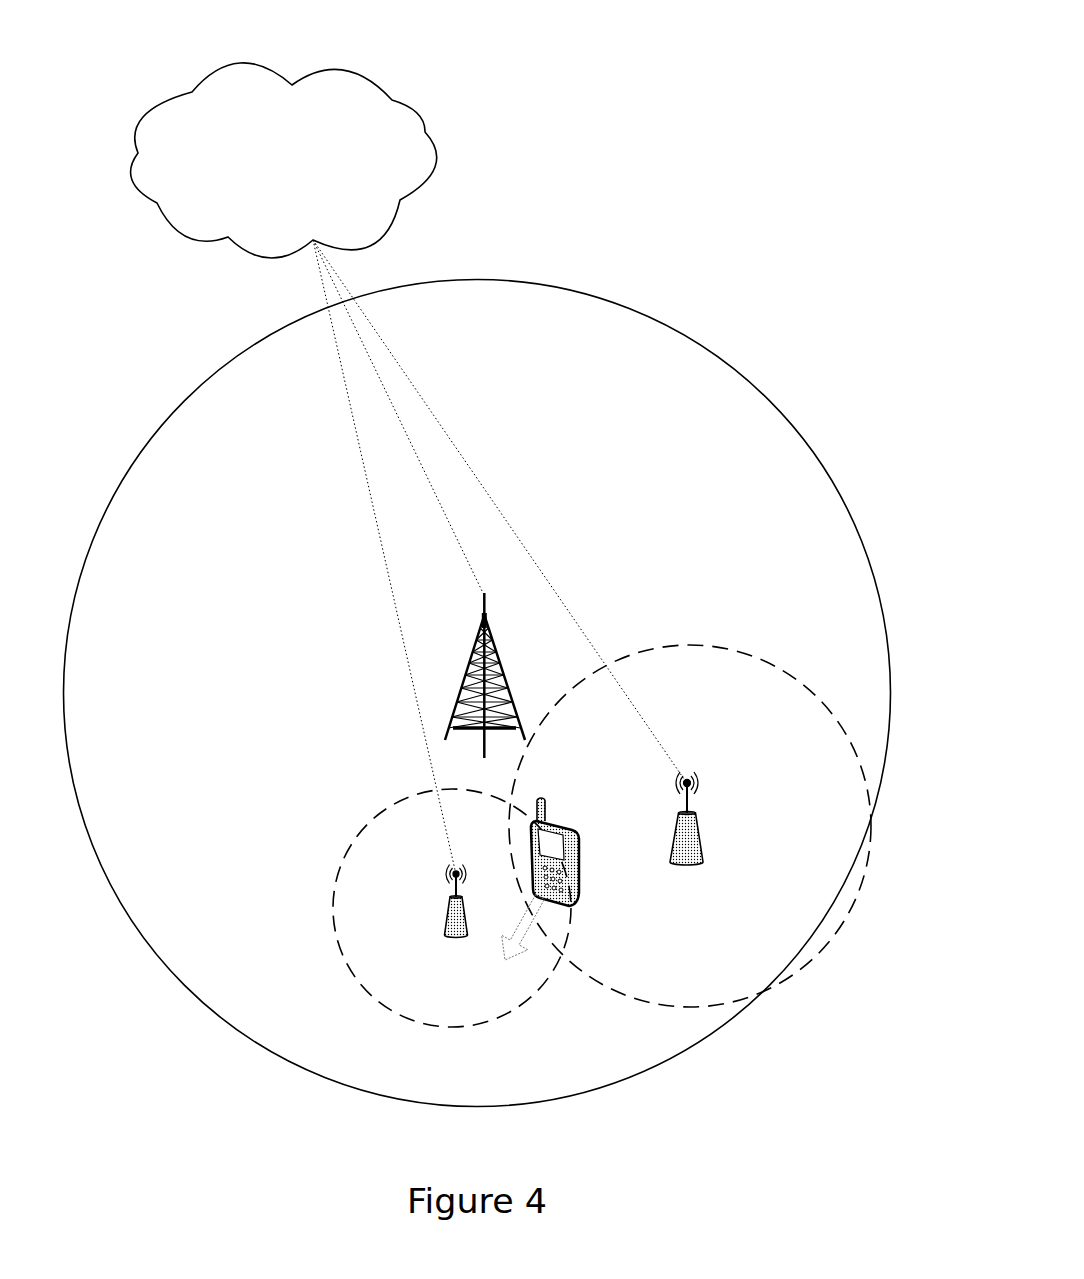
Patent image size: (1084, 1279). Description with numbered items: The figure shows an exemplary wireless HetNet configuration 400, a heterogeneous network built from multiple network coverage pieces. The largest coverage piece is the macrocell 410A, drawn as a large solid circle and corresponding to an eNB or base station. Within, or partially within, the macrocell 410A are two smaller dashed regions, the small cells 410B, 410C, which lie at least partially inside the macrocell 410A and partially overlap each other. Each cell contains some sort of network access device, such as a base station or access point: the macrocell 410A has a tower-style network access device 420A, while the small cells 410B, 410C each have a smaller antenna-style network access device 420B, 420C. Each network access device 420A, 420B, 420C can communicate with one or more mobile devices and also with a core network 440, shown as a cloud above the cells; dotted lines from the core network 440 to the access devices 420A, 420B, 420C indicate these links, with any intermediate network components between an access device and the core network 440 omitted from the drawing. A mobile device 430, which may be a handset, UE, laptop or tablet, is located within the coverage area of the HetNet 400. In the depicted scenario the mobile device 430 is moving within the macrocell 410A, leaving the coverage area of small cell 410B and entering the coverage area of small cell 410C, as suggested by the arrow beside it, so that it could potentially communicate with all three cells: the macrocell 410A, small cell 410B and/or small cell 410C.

The wireless HetNet configuration 400 is at (794, 98).
The core network 440 is at (294, 170).
The macrocell 410A is at (500, 322).
The small cell 410B is at (717, 681).
The small cell 410C is at (477, 1015).
The network access device 420A is at (495, 653).
The network access device 420B is at (697, 812).
The network access device 420C is at (447, 913).
The mobile device 430 is at (577, 900).